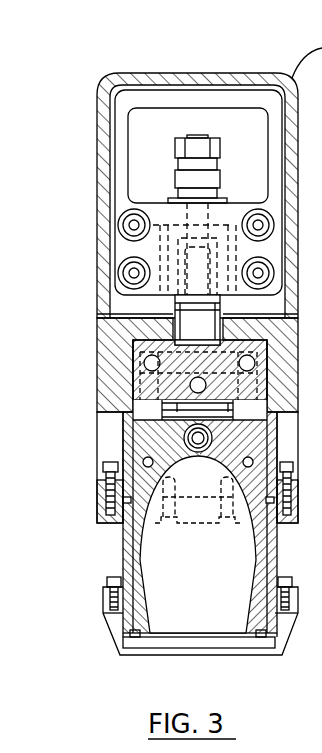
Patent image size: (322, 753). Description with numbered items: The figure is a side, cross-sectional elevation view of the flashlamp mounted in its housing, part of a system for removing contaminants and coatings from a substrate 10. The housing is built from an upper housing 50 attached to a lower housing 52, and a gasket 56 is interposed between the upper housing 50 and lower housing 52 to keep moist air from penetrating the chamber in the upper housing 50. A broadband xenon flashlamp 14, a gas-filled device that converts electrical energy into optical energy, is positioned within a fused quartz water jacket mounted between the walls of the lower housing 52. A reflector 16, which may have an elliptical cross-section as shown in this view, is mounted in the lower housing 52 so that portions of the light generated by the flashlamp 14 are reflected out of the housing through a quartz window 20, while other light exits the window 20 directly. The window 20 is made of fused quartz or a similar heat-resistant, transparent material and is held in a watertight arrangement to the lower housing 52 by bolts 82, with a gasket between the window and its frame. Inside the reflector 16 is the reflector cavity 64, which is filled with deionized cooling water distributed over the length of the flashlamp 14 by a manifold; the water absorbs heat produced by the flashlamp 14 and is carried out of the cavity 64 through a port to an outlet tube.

The substrate 10 is at (178, 370).
The upper housing 50 is at (97, 174).
The gasket 56 is at (99, 311).
The lower housing 52 is at (108, 375).
The reflector 16 is at (200, 486).
The broadband xenon flashlamp 14 is at (152, 596).
The reflector cavity 64 is at (229, 592).
The bolts 82 is at (113, 575).
The quartz window 20 is at (162, 655).